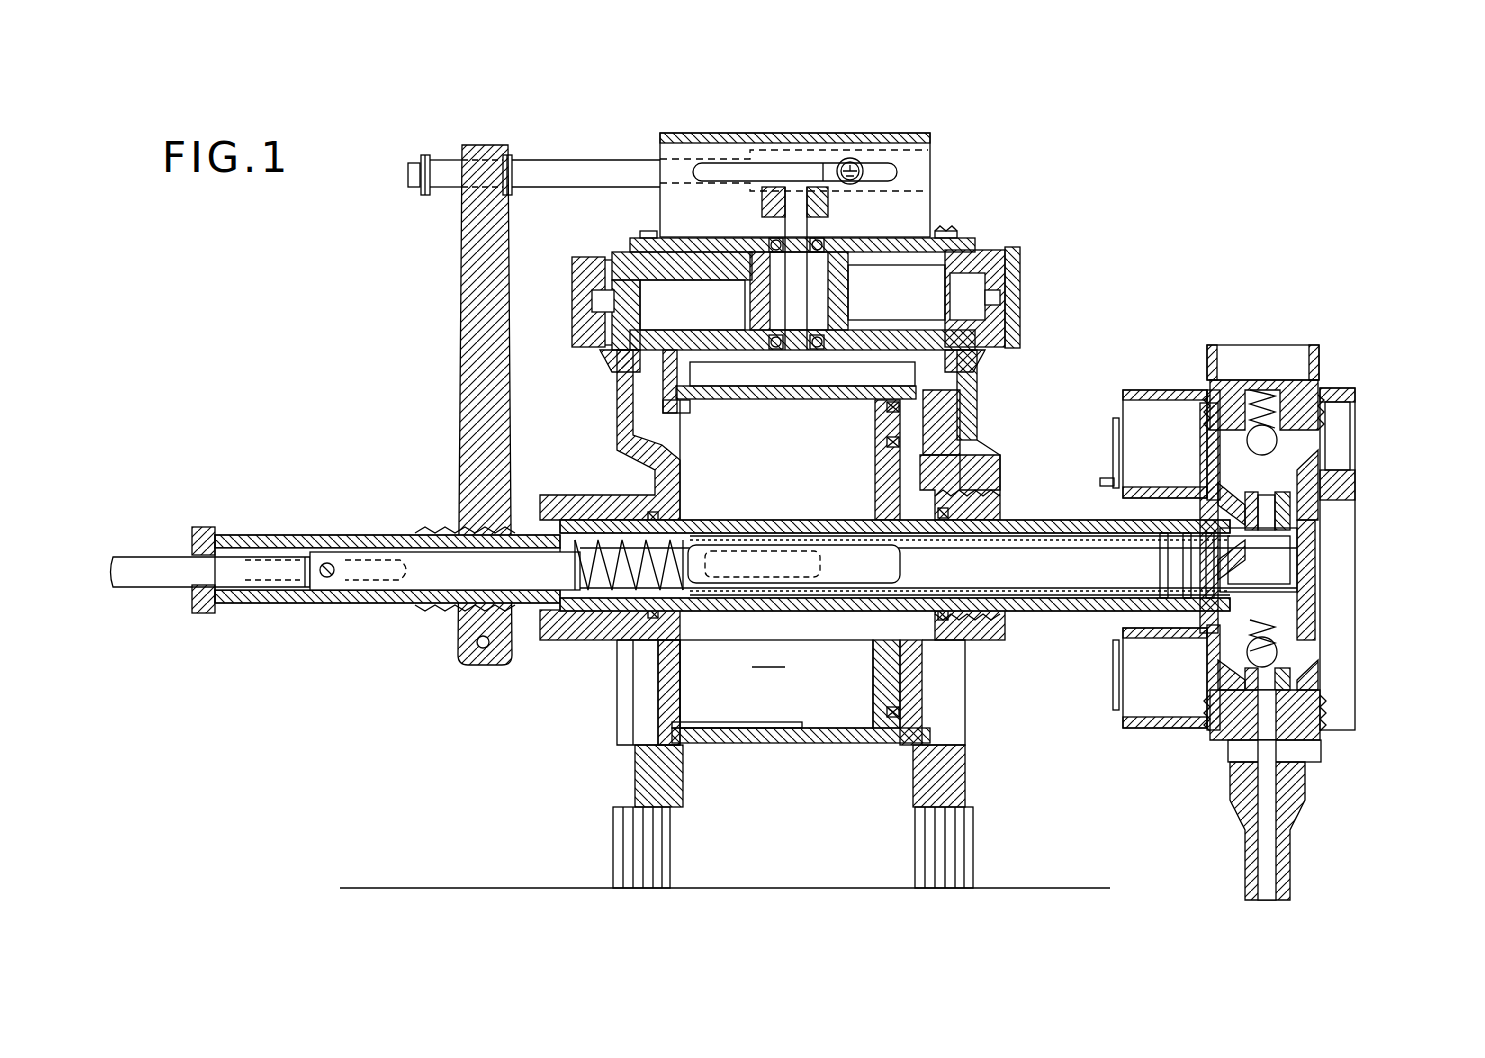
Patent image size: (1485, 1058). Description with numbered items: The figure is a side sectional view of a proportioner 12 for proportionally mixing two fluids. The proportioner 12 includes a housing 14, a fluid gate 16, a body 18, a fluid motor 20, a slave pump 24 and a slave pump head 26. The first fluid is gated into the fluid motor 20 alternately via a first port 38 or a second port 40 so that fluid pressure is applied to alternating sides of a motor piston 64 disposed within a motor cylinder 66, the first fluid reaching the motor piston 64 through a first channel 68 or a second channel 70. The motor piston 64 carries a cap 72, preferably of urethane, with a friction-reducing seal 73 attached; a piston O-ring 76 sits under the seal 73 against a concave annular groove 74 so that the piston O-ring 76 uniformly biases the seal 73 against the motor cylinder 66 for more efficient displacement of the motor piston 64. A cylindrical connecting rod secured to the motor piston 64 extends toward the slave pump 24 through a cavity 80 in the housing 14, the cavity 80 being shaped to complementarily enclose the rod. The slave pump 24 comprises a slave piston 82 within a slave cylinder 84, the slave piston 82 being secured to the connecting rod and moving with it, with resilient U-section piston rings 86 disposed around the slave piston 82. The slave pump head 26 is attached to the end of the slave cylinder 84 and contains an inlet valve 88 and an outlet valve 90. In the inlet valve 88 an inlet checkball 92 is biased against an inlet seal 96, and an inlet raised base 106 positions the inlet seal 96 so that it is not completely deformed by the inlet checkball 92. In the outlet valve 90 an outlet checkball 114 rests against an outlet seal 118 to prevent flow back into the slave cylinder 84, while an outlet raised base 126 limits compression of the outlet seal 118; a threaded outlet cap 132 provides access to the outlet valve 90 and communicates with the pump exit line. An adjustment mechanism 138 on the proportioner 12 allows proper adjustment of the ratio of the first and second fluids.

The proportioner 12 is at (1036, 126).
The housing 14 is at (623, 447).
The fluid gate 16 is at (805, 227).
The body 18 is at (990, 255).
The fluid motor 20 is at (760, 745).
The slave pump 24 is at (1035, 620).
The slave pump head 26 is at (1345, 395).
The first port 38 is at (672, 282).
The second port 40 is at (955, 236).
The motor piston 64 is at (888, 487).
The motor cylinder 66 is at (776, 682).
The first channel 68 is at (642, 398).
The second channel 70 is at (950, 408).
The cap 72 is at (895, 433).
The seal 73 is at (888, 745).
The concave annular groove 74 is at (892, 417).
The piston O-ring 76 is at (832, 735).
The cavity 80 is at (1092, 600).
The slave piston 82 is at (1130, 555).
The slave cylinder 84 is at (1268, 598).
The piston rings 86 is at (945, 492).
The inlet valve 88 is at (1318, 688).
The outlet valve 90 is at (1318, 443).
The inlet checkball 92 is at (1262, 652).
The inlet seal 96 is at (1305, 668).
The inlet raised base 106 is at (1245, 745).
The outlet checkball 114 is at (1242, 441).
The outlet seal 118 is at (1293, 479).
The outlet raised base 126 is at (1287, 512).
The threaded outlet cap 132 is at (1262, 358).
The adjustment mechanism 138 is at (245, 605).